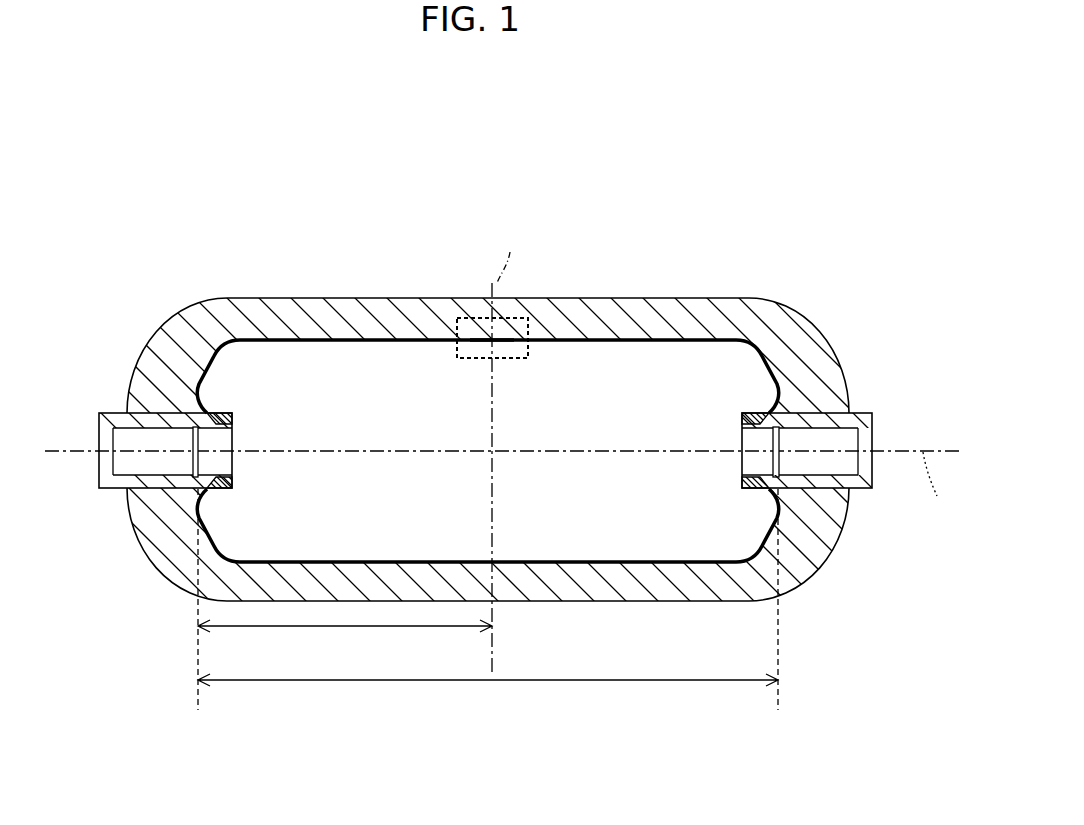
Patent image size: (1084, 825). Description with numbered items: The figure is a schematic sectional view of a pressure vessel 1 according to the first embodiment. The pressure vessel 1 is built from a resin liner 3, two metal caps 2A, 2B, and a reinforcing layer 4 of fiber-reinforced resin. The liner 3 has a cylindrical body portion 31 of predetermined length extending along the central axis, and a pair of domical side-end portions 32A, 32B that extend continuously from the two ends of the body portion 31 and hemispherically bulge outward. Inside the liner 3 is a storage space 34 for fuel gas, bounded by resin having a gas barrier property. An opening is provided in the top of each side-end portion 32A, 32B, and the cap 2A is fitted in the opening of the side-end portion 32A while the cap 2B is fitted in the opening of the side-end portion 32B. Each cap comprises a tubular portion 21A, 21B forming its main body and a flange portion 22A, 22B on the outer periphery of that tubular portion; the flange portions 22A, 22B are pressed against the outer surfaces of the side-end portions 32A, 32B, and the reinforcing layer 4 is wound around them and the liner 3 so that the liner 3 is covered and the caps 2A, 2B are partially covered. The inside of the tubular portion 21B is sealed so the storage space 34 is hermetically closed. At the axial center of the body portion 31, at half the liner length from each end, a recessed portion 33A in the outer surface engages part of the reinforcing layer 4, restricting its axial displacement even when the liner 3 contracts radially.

The pressure vessel 1 is at (762, 208).
The cap 2A is at (125, 460).
The cap 2B is at (830, 478).
The liner 3 is at (595, 343).
The reinforcing layer 4 is at (637, 325).
The tubular portion 21A is at (131, 482).
The tubular portion 21B is at (835, 425).
The flange portion 22A is at (196, 489).
The flange portion 22B is at (781, 405).
The body portion 31 is at (407, 337).
The side-end portion 32A is at (223, 343).
The side-end portion 32B is at (797, 328).
The recessed portion 33A is at (492, 337).
The storage space 34 is at (562, 497).